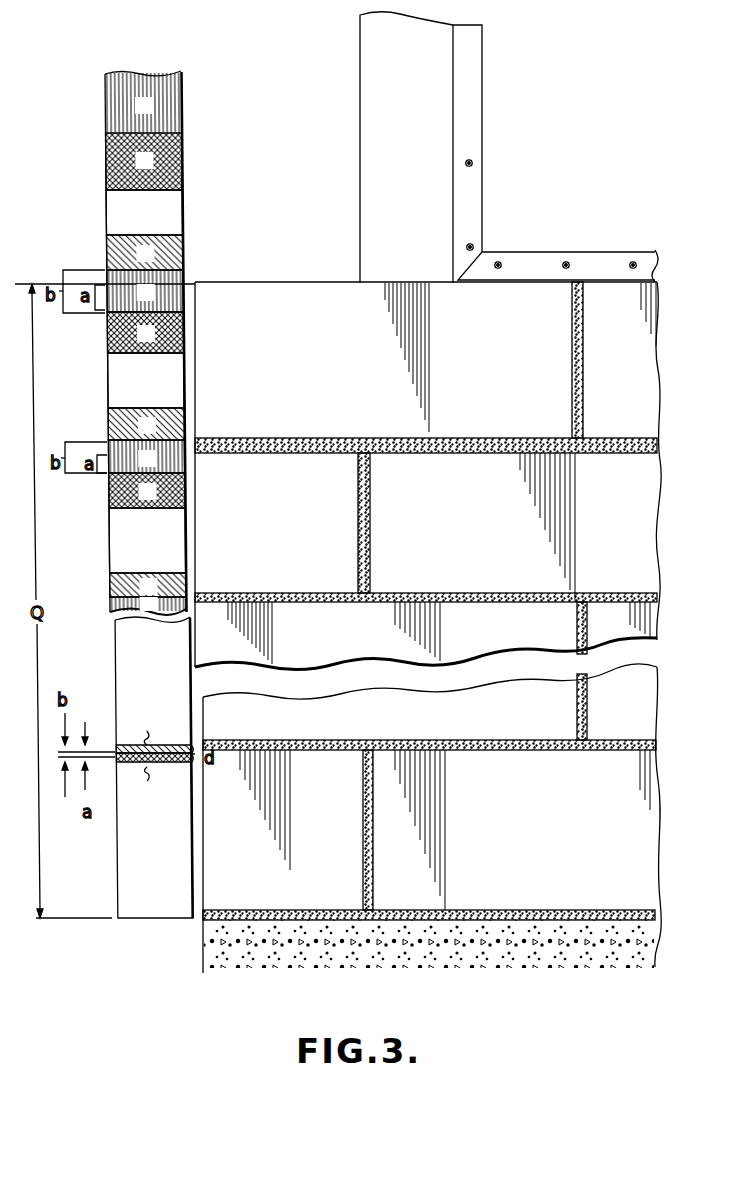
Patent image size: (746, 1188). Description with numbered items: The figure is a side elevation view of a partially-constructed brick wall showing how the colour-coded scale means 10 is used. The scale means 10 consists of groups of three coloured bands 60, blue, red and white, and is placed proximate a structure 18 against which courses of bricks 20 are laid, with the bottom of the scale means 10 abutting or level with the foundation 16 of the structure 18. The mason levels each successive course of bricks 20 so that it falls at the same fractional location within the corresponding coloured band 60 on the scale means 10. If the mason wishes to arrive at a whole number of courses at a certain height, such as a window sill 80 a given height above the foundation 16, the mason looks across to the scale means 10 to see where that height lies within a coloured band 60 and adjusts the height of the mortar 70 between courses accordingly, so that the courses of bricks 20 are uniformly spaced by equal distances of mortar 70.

The colour-coded scale means 10 is at (107, 190).
The foundation 16 is at (583, 952).
The structure 18 is at (392, 162).
The bricks 20 is at (298, 300).
The coloured bands 60 is at (184, 102).
The mortar 70 is at (287, 446).
The window sill 80 is at (480, 283).